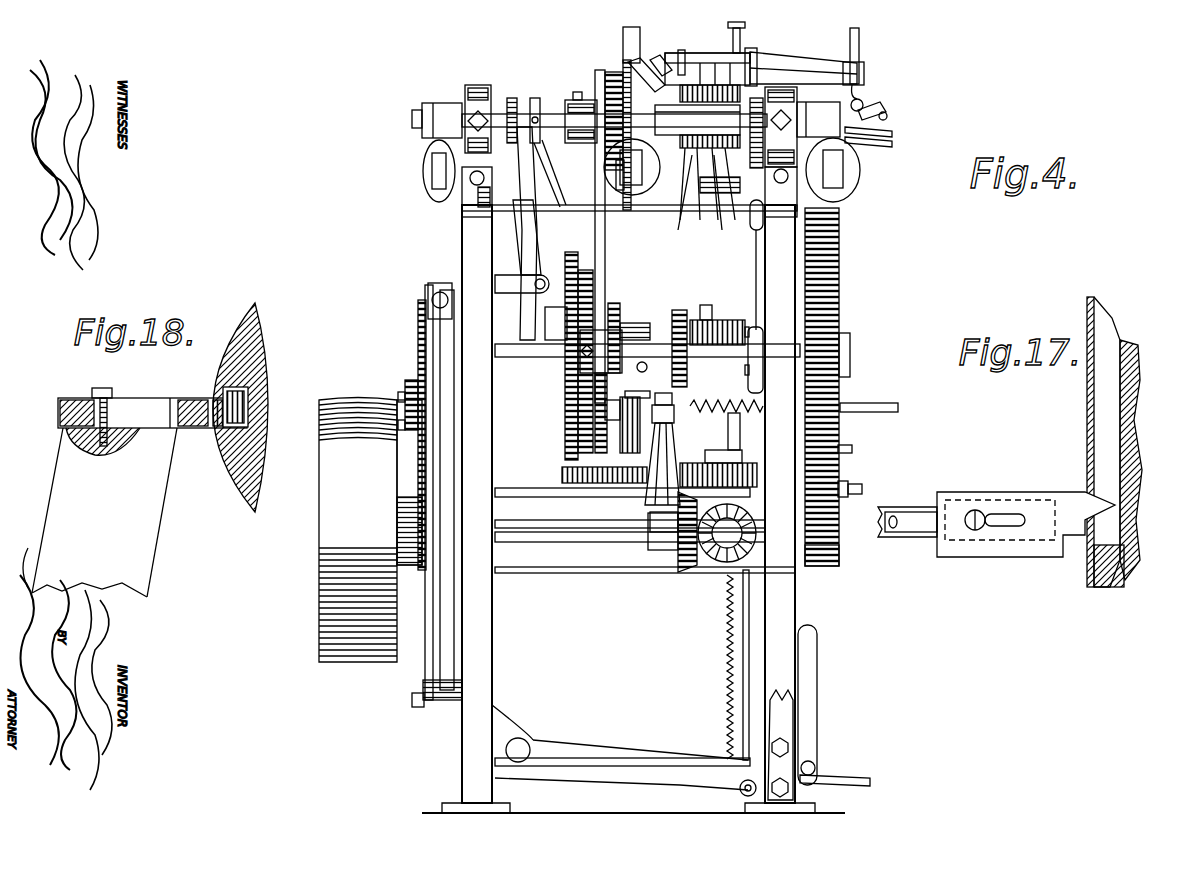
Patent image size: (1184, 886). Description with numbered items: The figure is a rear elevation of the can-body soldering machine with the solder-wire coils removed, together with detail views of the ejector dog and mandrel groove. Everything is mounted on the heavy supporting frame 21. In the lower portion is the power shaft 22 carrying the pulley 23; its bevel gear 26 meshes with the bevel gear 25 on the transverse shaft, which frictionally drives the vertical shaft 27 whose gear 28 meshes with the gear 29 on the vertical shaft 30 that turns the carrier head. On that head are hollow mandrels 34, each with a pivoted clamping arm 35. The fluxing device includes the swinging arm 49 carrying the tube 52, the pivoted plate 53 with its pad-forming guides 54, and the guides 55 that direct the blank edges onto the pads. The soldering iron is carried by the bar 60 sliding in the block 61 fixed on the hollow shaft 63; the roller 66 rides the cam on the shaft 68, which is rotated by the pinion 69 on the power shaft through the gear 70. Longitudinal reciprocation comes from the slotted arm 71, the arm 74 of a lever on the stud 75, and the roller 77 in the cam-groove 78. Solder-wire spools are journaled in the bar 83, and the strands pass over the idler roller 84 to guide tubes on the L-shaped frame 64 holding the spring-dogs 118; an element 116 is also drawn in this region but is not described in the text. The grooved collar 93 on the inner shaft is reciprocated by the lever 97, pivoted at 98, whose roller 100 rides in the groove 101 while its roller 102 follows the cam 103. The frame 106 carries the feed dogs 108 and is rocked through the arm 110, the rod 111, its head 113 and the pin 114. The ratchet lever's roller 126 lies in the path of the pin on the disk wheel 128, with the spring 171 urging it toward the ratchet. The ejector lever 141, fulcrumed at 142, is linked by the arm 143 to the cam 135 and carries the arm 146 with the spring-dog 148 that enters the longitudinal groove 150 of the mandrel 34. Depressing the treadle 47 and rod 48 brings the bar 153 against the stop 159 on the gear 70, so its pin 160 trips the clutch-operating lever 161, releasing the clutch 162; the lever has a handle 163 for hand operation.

In FIG. 4, the supporting frame 21 is at (488, 670).
In FIG. 4, the power shaft 22 is at (620, 542).
In FIG. 4, the pulley 23 is at (340, 515).
In FIG. 4, the bevel gear 25 is at (718, 560).
In FIG. 4, the bevel gear 26 is at (690, 565).
In FIG. 4, the vertical shaft 27 is at (740, 430).
In FIG. 4, the gear 28 is at (755, 474).
In FIG. 4, the gear 29 is at (660, 430).
In FIG. 4, the vertical shaft 30 is at (578, 432).
In FIG. 4, the mandrel 34 is at (424, 178).
In FIG. 17, the mandrel 34 is at (1130, 368).
In FIG. 4, the arm 35 is at (628, 195).
In FIG. 4, the treadle 47 is at (845, 780).
In FIG. 4, the rod 48 is at (817, 672).
In FIG. 4, the swinging arm 49 is at (790, 66).
In FIG. 4, the tube 52 is at (862, 54).
In FIG. 4, the plate 53 is at (892, 133).
In FIG. 4, the guides 54 is at (892, 144).
In FIG. 4, the guides 55 is at (888, 110).
In FIG. 4, the bar 60 is at (598, 122).
In FIG. 4, the block 61 is at (630, 62).
In FIG. 4, the sleeve or hollow shaft 63 is at (412, 118).
In FIG. 4, the L-shaped frame 64 is at (707, 63).
In FIG. 4, the roller 66 is at (616, 320).
In FIG. 4, the shaft 68 is at (644, 362).
In FIG. 4, the pinion 69 is at (838, 552).
In FIG. 4, the gear 70 is at (840, 246).
In FIG. 4, the arm 71 is at (600, 76).
In FIG. 4, the arm 74 is at (606, 266).
In FIG. 4, the stud or shaft 75 is at (708, 345).
In FIG. 4, the roller 77 is at (595, 455).
In FIG. 4, the cam-groove 78 is at (565, 425).
In FIG. 4, the bar 83 is at (793, 705).
In FIG. 4, the idler roller 84 is at (662, 150).
In FIG. 4, the grooved collar 93 is at (492, 100).
In FIG. 4, the lever 97 is at (524, 340).
In FIG. 4, the pivot 98 is at (535, 278).
In FIG. 4, the roller 100 is at (538, 106).
In FIG. 4, the groove 101 is at (516, 102).
In FIG. 4, the roller 102 is at (565, 400).
In FIG. 4, the cam 103 is at (557, 305).
In FIG. 4, the frame 106 is at (747, 152).
In FIG. 4, the dog 108 is at (676, 203).
In FIG. 4, the arm 110 is at (717, 203).
In FIG. 4, the rod 111 is at (752, 232).
In FIG. 4, the head 113 is at (753, 370).
In FIG. 4, the pin 114 is at (747, 333).
In FIG. 4, the valve 116 is at (720, 37).
In FIG. 4, the spring-dog 118 is at (752, 60).
In FIG. 4, the roller 126 is at (600, 475).
In FIG. 4, the disk wheel 128 is at (684, 320).
In FIG. 4, the cam 135 is at (418, 330).
In FIG. 4, the lever 141 is at (428, 635).
In FIG. 4, the fulcrum 142 is at (418, 707).
In FIG. 4, the arm 143 is at (405, 390).
In FIG. 18, the arm 146 is at (150, 537).
In FIG. 18, the spring-dog 148 is at (205, 432).
In FIG. 17, the spring-dog 148 is at (1087, 508).
In FIG. 18, the longitudinal groove 150 is at (258, 395).
In FIG. 17, the longitudinal groove 150 is at (1092, 418).
In FIG. 4, the bar 153 is at (848, 484).
In FIG. 4, the stop 159 is at (852, 449).
In FIG. 4, the pin 160 is at (862, 490).
In FIG. 4, the clutch-operating lever 161 is at (590, 552).
In FIG. 4, the clutch 162 is at (397, 552).
In FIG. 4, the handle 163 is at (898, 407).
In FIG. 4, the spring 171 is at (760, 392).